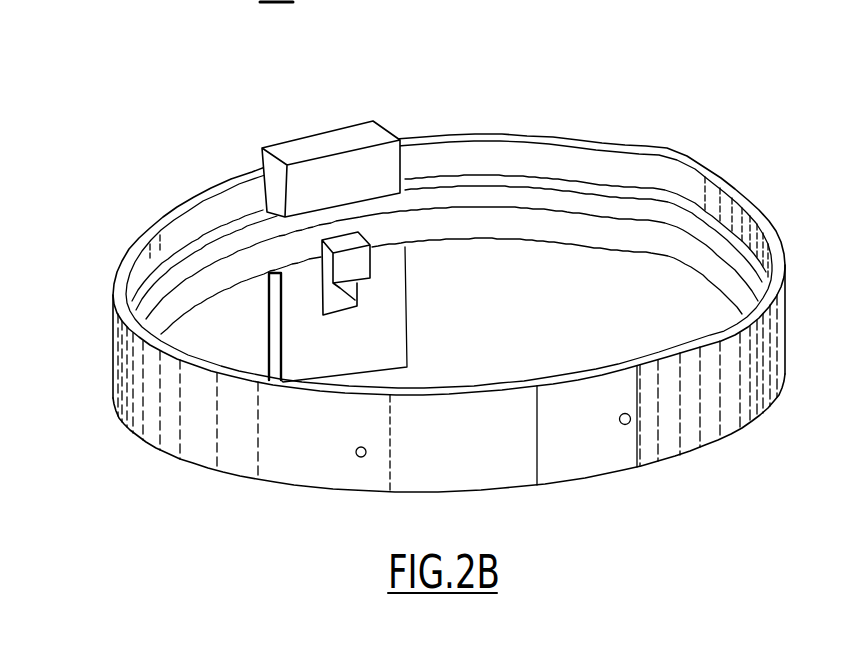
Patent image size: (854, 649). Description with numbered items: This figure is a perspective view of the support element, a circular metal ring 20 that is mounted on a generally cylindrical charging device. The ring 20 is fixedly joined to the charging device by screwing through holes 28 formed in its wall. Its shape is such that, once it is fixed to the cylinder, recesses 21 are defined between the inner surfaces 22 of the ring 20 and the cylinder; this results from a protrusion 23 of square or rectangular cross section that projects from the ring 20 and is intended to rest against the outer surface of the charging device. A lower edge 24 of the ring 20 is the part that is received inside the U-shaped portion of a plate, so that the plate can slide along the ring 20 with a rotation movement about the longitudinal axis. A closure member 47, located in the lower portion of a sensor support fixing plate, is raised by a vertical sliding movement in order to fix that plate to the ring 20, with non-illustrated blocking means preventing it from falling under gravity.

The circular metal ring 20 is at (312, 128).
The recesses 21 is at (462, 168).
The inner surfaces 22 is at (663, 170).
The protrusion 23 is at (497, 182).
The lower edge 24 is at (574, 478).
The holes 28 is at (355, 451).
The closure member 47 is at (321, 243).